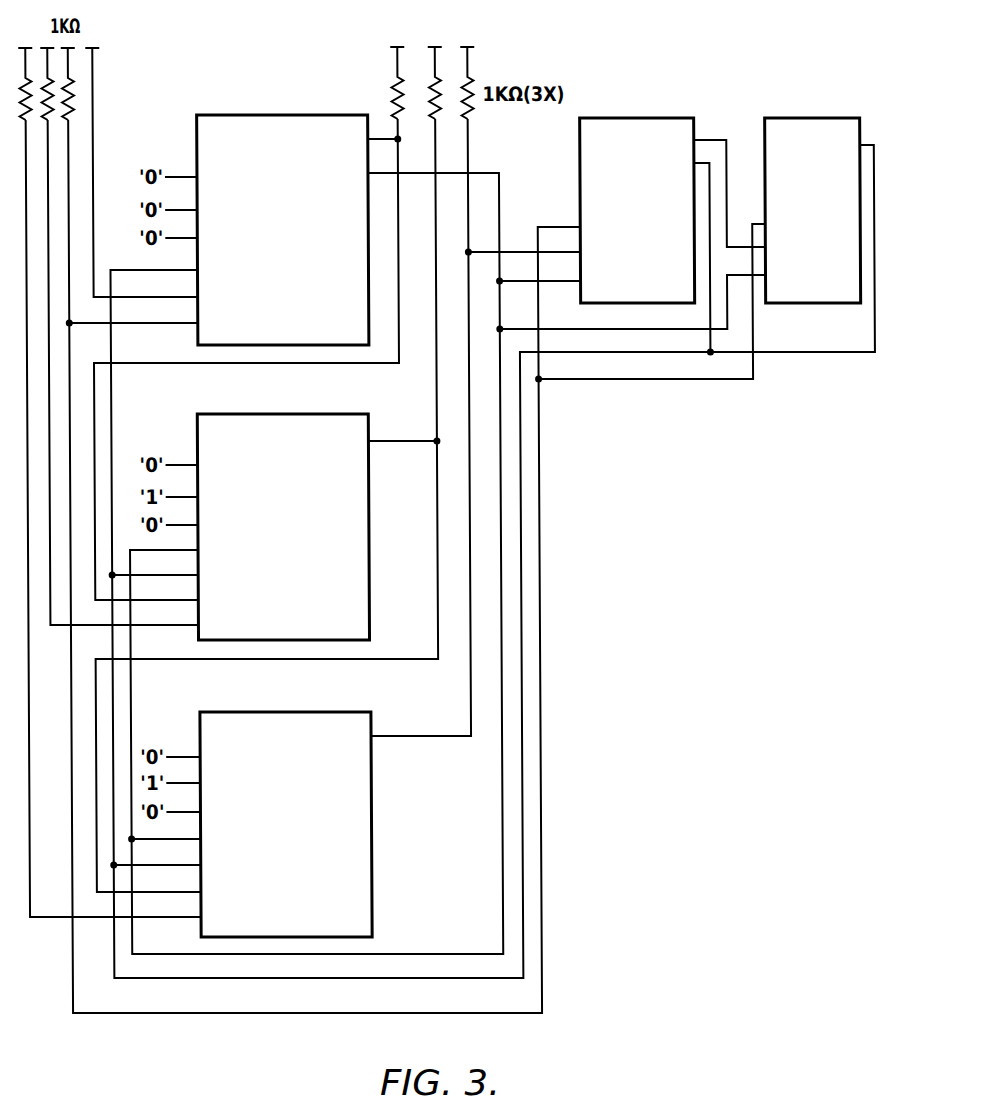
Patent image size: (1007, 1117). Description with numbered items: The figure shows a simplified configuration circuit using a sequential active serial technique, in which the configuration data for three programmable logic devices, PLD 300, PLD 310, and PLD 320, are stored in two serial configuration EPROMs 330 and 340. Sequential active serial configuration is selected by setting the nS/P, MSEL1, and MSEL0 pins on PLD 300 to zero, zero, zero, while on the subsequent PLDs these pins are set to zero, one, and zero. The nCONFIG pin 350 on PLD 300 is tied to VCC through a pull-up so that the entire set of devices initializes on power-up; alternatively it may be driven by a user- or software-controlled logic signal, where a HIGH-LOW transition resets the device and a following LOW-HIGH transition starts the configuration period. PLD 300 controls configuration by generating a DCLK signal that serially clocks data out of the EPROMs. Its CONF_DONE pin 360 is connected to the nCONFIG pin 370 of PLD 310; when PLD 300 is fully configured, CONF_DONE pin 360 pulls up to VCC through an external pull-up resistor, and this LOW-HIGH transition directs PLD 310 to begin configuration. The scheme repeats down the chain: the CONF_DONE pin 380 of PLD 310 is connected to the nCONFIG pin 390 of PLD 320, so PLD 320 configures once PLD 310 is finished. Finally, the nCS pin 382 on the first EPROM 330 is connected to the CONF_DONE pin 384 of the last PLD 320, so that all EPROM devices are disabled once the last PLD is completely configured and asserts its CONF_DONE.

The PLD 300 is at (196, 128).
The PLD 310 is at (195, 420).
The PLD 320 is at (196, 718).
The serial configuration EPROM 330 is at (579, 130).
The serial configuration EPROM 340 is at (765, 126).
The nCONFIG pin 350 is at (93, 280).
The CONF_DONE pin 360 is at (376, 137).
The nCONFIG pin 370 is at (183, 601).
The CONF_DONE pin 380 is at (386, 440).
The nCS pin 382 is at (526, 251).
The CONF_DONE pin 384 is at (412, 736).
The nCONFIG pin 390 is at (183, 893).